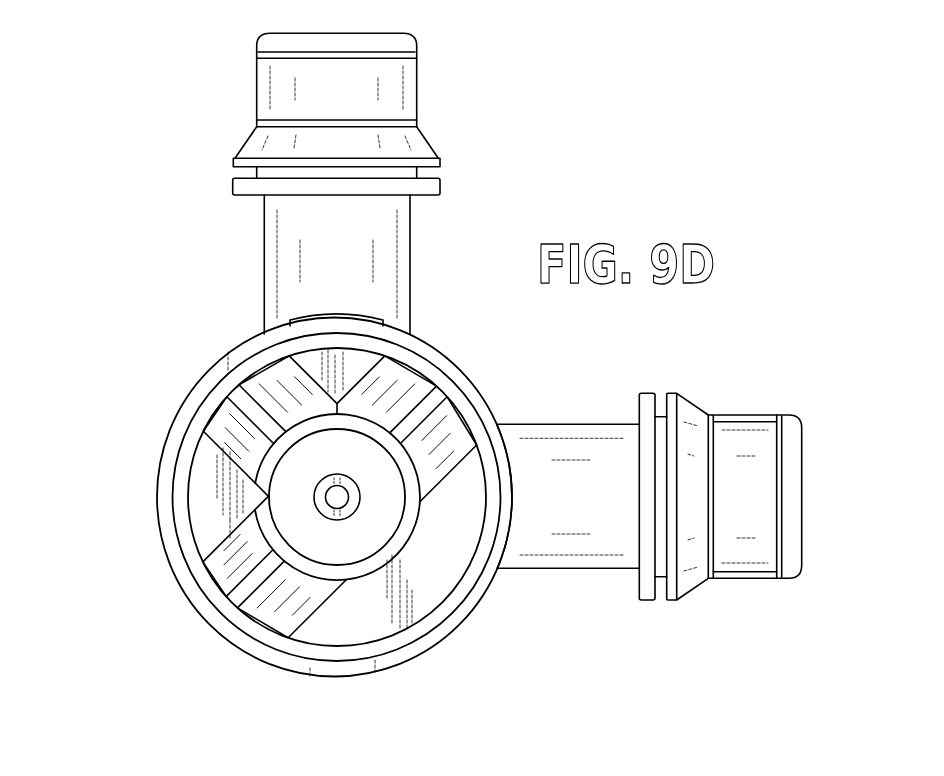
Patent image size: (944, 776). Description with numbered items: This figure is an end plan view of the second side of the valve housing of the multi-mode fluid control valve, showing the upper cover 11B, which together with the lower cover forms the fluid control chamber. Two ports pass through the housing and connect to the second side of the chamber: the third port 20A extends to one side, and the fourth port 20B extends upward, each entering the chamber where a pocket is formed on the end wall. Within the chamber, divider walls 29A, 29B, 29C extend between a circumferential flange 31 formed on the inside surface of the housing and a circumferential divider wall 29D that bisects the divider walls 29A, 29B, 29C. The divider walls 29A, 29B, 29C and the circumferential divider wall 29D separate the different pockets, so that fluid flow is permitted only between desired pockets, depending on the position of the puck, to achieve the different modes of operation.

The upper cover 11B is at (455, 632).
The circumferential flange 31 is at (177, 520).
The divider wall 29A is at (428, 407).
The divider wall 29B is at (247, 584).
The divider wall 29C is at (250, 412).
The circumferential divider wall 29D is at (402, 538).
The third port 20A is at (616, 457).
The fourth port 20B is at (287, 266).